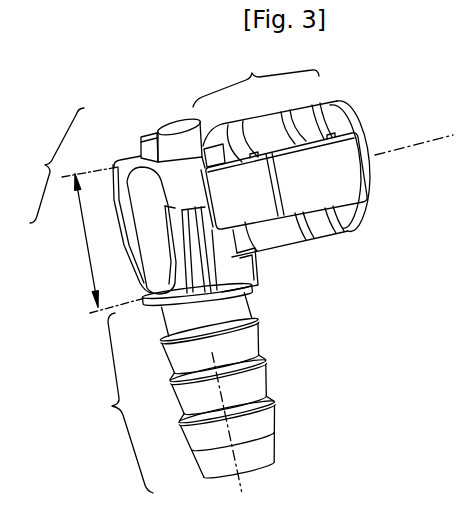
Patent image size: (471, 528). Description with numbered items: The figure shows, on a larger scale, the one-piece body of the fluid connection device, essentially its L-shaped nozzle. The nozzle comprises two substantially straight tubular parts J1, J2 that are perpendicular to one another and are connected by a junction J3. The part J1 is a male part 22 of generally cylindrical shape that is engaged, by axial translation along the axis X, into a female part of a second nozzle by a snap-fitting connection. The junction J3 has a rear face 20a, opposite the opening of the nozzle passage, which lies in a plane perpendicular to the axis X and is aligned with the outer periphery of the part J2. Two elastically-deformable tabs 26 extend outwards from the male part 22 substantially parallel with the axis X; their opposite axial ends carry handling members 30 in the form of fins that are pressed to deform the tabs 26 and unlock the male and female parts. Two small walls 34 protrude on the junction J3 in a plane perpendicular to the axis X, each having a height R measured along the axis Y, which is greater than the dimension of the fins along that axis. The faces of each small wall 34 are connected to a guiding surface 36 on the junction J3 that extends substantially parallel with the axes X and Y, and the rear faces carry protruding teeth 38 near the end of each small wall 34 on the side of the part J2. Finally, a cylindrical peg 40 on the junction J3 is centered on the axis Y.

The rear face 20a is at (140, 203).
The male part 22 is at (323, 122).
The elastically-deformable tab 26 is at (293, 208).
The handling member 30 is at (247, 200).
The small wall 34 is at (152, 135).
The guiding surface 36 is at (208, 270).
The tooth 38 is at (222, 293).
The cylindrical peg 40 is at (181, 126).
The first part of the nozzle J1 is at (256, 76).
The second part of the nozzle J2 is at (119, 403).
The junction J3 is at (48, 165).
The height of the small walls R is at (103, 240).
The axis X is at (438, 140).
The axis Y is at (241, 491).